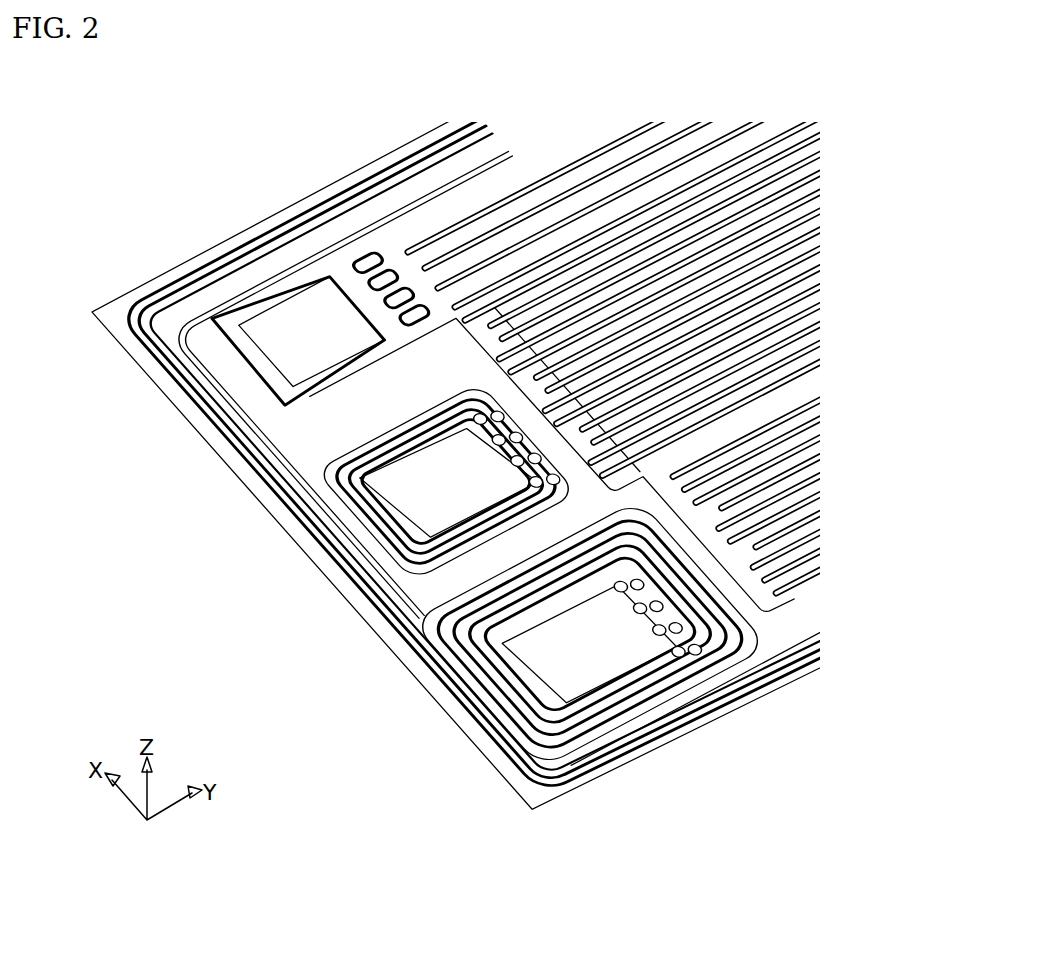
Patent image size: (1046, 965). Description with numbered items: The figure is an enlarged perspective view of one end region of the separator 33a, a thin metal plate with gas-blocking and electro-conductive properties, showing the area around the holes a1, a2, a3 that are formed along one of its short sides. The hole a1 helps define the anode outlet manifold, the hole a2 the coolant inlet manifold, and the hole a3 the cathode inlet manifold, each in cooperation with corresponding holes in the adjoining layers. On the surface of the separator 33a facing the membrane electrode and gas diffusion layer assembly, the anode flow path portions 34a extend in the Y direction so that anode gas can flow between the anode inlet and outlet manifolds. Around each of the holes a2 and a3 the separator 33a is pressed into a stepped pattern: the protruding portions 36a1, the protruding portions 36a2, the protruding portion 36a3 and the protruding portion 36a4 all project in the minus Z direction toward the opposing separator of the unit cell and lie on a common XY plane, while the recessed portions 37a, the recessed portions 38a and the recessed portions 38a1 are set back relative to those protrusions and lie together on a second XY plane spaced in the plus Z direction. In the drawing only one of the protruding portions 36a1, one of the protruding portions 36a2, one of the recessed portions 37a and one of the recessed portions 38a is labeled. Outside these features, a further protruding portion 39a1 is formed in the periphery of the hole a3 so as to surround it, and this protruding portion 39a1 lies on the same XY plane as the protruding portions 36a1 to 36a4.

The separator 33a is at (479, 463).
The anode flow path portions 34a is at (608, 370).
The hole a1 is at (271, 363).
The hole a2 is at (415, 504).
The hole a3 is at (569, 634).
The protruding portions 36a1 is at (520, 552).
The protruding portions 36a2 is at (524, 545).
The protruding portion 36a3 is at (476, 592).
The protruding portion 36a4 is at (460, 642).
The recessed portions 37a is at (519, 630).
The recessed portions 38a is at (577, 596).
The recessed portions 38a1 is at (523, 474).
The protruding portion 39a1 is at (514, 461).